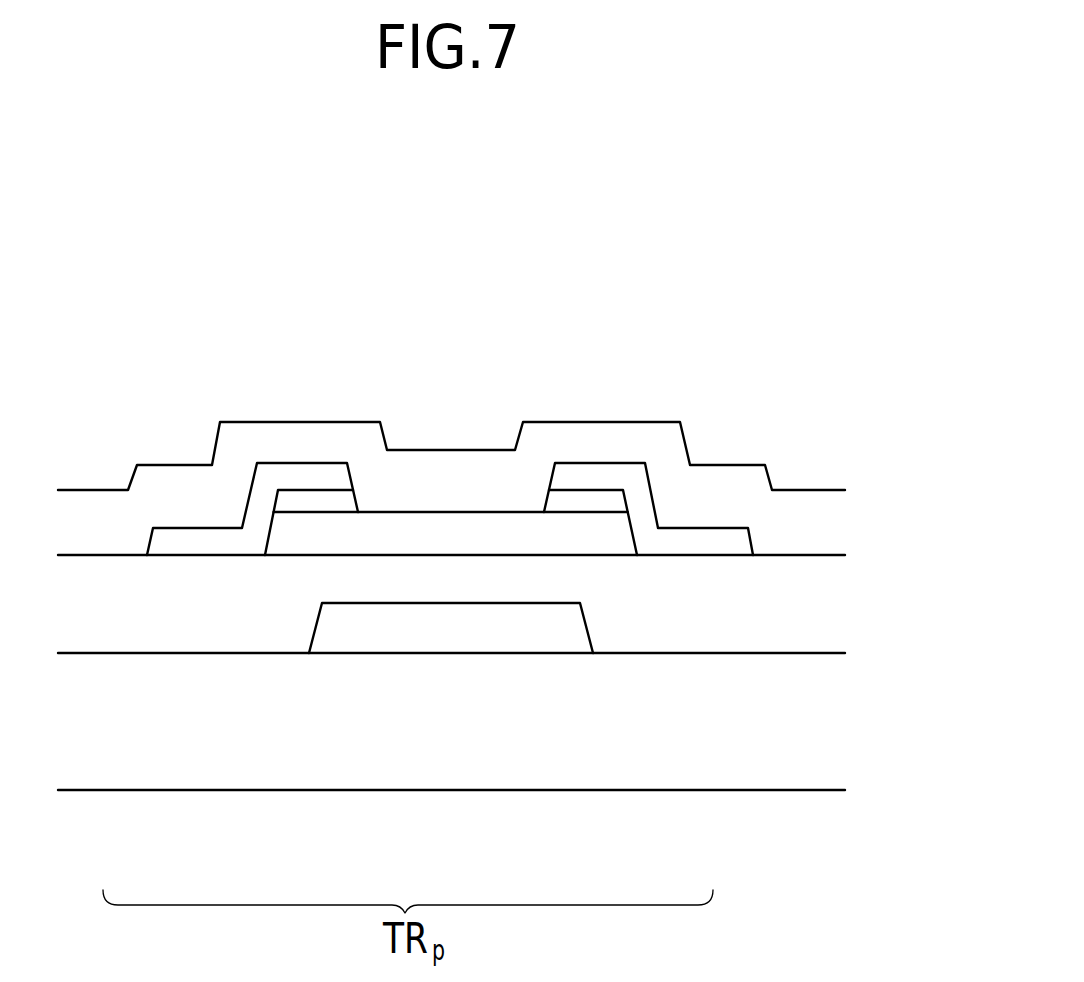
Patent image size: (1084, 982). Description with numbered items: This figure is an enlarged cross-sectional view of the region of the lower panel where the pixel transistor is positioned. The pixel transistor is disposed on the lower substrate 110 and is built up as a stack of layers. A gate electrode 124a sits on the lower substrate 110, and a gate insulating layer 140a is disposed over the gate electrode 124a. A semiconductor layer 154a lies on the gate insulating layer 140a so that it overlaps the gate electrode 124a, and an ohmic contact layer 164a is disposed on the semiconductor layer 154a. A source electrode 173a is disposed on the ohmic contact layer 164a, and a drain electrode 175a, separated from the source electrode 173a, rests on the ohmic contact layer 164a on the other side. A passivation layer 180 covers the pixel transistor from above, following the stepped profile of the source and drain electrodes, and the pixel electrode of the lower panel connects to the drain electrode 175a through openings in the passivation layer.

The lower substrate 110 is at (822, 730).
The gate electrode 124a is at (448, 632).
The gate insulating layer 140a is at (232, 632).
The semiconductor layer 154a is at (535, 537).
The ohmic contact layer 164a is at (313, 505).
The source electrode 173a is at (190, 540).
The drain electrode 175a is at (668, 547).
The passivation layer 180 is at (822, 523).